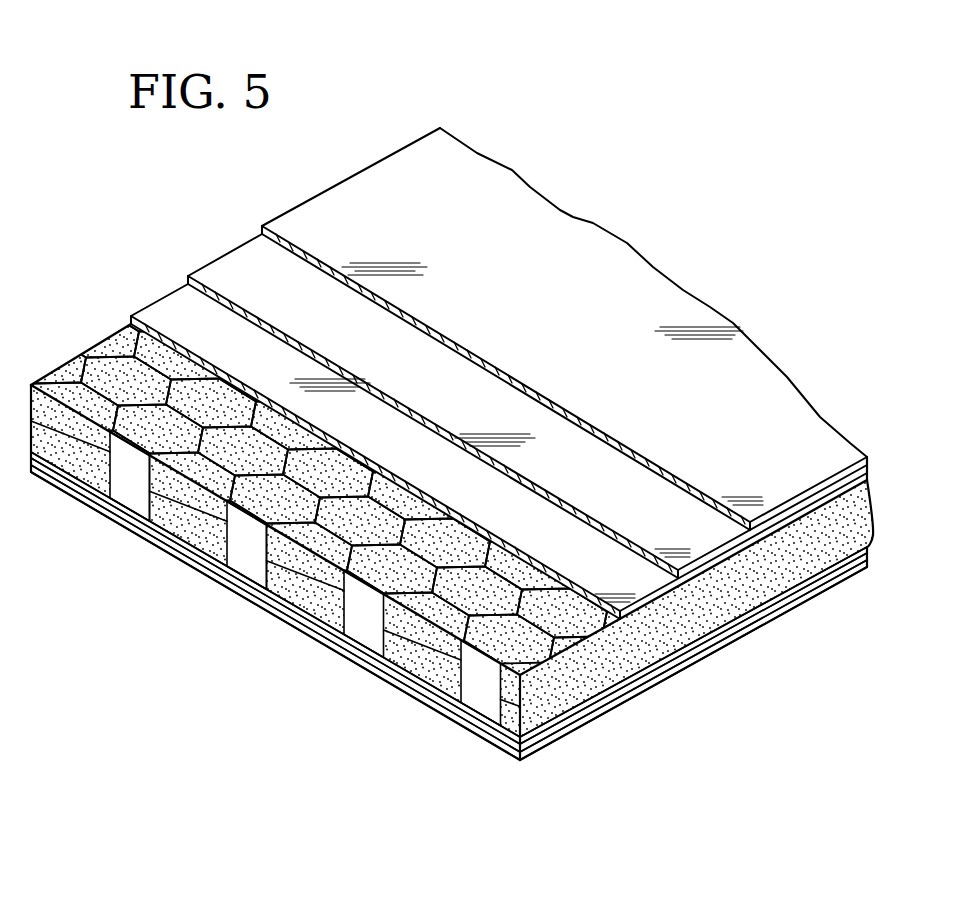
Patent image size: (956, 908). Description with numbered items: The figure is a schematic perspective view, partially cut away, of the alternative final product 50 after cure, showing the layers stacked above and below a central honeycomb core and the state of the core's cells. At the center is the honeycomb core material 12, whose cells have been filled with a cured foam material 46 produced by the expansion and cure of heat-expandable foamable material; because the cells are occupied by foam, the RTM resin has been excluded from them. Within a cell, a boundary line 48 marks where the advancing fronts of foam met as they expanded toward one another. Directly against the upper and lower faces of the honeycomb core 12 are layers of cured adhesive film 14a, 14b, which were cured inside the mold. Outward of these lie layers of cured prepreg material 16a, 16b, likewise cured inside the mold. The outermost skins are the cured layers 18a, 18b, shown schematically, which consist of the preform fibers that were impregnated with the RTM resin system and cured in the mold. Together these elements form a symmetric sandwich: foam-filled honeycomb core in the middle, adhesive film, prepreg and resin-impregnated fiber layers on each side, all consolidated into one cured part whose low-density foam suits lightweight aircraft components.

The alternative final product 50 is at (152, 277).
The central honeycomb core material 12 is at (367, 631).
The cured foam material 46 is at (182, 527).
The boundary line 48 is at (302, 592).
The cured adhesive film layer 14a is at (403, 454).
The cured prepreg material layer 16a is at (447, 389).
The cured preform fiber layer 18a is at (556, 280).
The cured adhesive film layer 14b is at (646, 674).
The cured prepreg material layer 16b is at (600, 722).
The cured preform fiber layer 18b is at (547, 748).